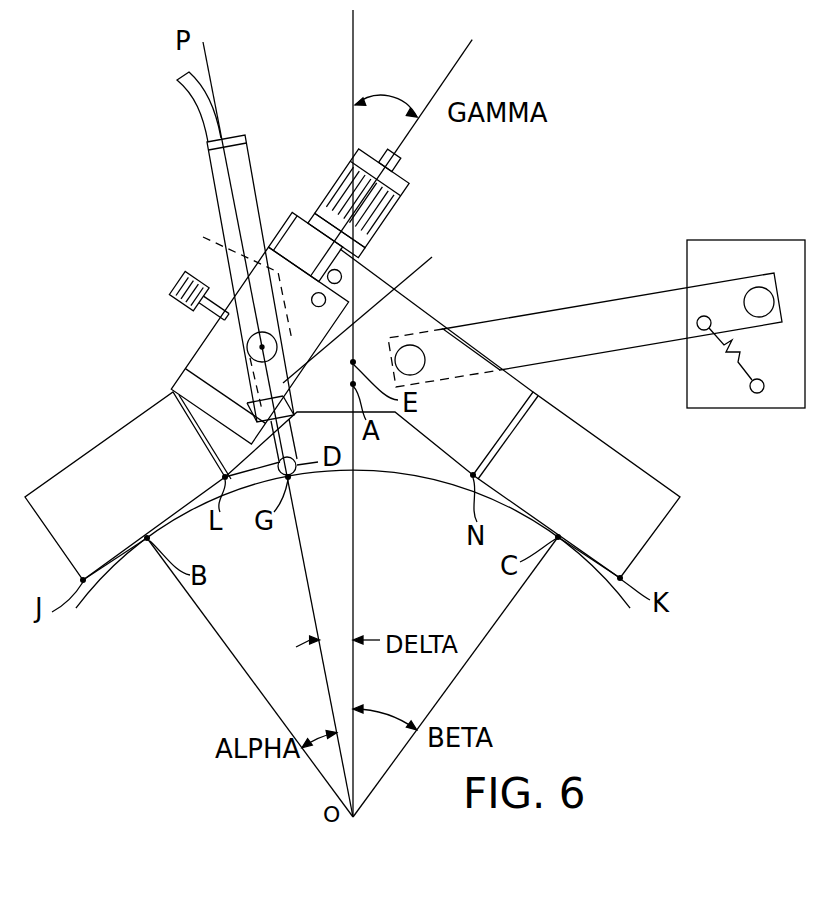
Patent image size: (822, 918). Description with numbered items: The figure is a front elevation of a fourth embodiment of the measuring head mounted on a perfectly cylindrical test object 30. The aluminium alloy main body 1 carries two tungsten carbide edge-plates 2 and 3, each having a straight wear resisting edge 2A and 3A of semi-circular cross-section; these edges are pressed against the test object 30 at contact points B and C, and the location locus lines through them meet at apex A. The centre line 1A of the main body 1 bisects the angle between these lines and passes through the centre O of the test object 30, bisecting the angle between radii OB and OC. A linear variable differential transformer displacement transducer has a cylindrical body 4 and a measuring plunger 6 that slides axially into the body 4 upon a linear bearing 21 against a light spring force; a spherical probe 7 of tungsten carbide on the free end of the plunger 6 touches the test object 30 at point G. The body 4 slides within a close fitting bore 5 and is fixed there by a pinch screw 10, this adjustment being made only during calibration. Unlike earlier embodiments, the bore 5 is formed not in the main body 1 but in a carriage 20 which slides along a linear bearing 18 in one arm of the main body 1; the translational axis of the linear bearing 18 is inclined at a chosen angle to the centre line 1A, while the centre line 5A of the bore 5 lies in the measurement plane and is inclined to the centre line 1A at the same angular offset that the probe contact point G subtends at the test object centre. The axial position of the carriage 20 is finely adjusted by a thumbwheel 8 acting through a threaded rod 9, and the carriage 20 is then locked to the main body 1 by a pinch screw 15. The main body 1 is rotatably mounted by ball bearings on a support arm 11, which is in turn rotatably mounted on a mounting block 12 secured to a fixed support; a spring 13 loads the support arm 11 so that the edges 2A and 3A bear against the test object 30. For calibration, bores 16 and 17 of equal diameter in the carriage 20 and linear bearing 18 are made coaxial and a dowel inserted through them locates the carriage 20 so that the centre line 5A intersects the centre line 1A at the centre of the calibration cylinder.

The main body 1 is at (408, 323).
The centre line of the main body 1A is at (353, 578).
The edge-plate 2 is at (160, 422).
The wear resisting edge 2A is at (112, 563).
The edge-plate 3 is at (617, 487).
The wear resisting edge 3A is at (586, 560).
The body of the displacement transducer 4 is at (220, 205).
The bore 5 is at (232, 250).
The centre line of the bore 5A is at (231, 284).
The measuring plunger 6 is at (291, 439).
The spherical probe 7 is at (280, 482).
The thumbwheel 8 is at (345, 206).
The threaded rod 9 is at (363, 248).
The pinch screw 10 is at (283, 345).
The support arm 11 is at (593, 320).
The mounting block 12 is at (742, 250).
The spring 13 is at (723, 355).
The pinch screw 15 is at (180, 285).
The bore 16 is at (378, 294).
The bore 17 is at (342, 270).
The linear bearing 18 is at (190, 387).
The carriage 20 is at (213, 368).
The linear bearing 21 is at (290, 401).
The test object 30 is at (84, 596).